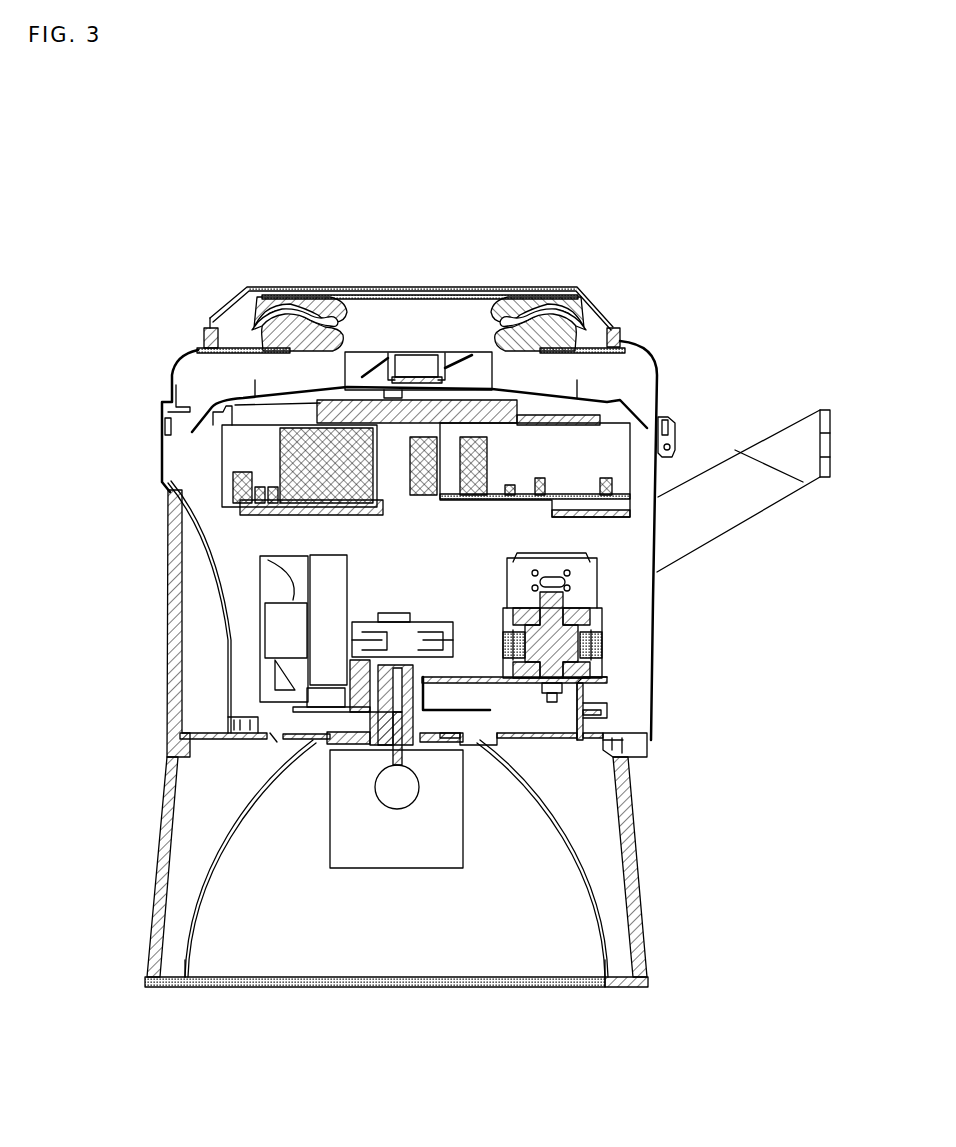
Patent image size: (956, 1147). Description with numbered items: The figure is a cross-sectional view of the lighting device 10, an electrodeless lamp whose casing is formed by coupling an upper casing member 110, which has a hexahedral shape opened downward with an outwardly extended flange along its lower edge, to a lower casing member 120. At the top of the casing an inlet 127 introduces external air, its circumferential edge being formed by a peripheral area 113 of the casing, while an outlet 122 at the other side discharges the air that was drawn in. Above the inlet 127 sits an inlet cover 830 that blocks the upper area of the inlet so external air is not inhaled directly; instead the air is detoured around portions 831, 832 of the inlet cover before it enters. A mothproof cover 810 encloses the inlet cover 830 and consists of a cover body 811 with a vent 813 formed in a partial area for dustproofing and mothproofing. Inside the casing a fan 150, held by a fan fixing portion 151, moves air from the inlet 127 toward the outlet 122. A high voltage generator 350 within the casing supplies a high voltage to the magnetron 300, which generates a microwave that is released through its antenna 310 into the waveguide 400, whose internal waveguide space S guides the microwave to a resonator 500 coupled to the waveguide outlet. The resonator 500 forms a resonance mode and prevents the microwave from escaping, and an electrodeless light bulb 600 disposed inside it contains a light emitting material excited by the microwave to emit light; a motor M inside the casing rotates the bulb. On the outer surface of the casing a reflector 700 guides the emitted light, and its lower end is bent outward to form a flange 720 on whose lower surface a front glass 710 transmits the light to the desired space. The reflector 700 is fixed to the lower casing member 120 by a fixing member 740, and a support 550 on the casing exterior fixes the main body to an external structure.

The lighting device 10 is at (100, 230).
The upper casing member 110 is at (172, 383).
The peripheral area 113 is at (575, 335).
The lower casing member 120 is at (220, 600).
The outlet 122 is at (273, 735).
The inlet 127 is at (405, 343).
The fan 150 is at (367, 367).
The fan fixing portion 151 is at (627, 405).
The magnetron 300 is at (602, 642).
The antenna 310 is at (575, 672).
The high voltage generator 350 is at (222, 518).
The waveguide 400 is at (587, 697).
The resonator 500 is at (440, 870).
The support 550 is at (768, 490).
The electrodeless light bulb 600 is at (397, 809).
The reflector 700 is at (585, 860).
The front glass 710 is at (293, 987).
The flange 720 is at (633, 987).
The fixing member 740 is at (172, 815).
The mothproof cover 810 is at (597, 196).
The cover body 811 is at (515, 283).
The vent 813 is at (563, 282).
The inlet cover 830 is at (472, 200).
The portion of the inlet cover 831 is at (427, 293).
The portion of the inlet cover 832 is at (520, 300).
The motor M is at (600, 625).
The waveguide space S is at (633, 740).